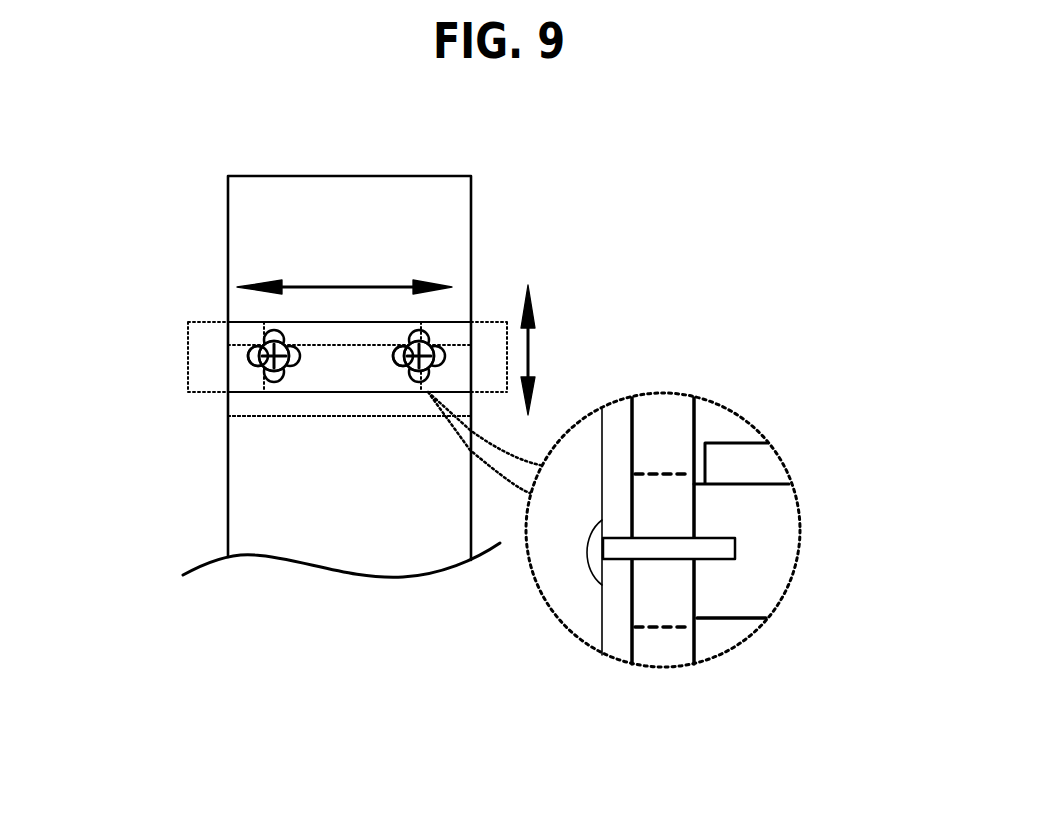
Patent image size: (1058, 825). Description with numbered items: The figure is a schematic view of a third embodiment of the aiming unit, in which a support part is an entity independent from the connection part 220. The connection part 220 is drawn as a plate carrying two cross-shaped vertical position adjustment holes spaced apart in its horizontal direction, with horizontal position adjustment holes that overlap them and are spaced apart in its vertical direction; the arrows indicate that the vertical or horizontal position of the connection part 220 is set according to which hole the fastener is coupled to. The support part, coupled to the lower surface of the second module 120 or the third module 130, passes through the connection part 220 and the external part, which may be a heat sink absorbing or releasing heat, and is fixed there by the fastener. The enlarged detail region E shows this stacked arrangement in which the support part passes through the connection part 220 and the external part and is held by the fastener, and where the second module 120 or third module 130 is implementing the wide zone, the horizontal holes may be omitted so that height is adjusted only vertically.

The connection part 220 is at (472, 238).
The second module 120 is at (803, 402).
The third module 130 is at (730, 442).
The enlarged detail region E is at (613, 617).